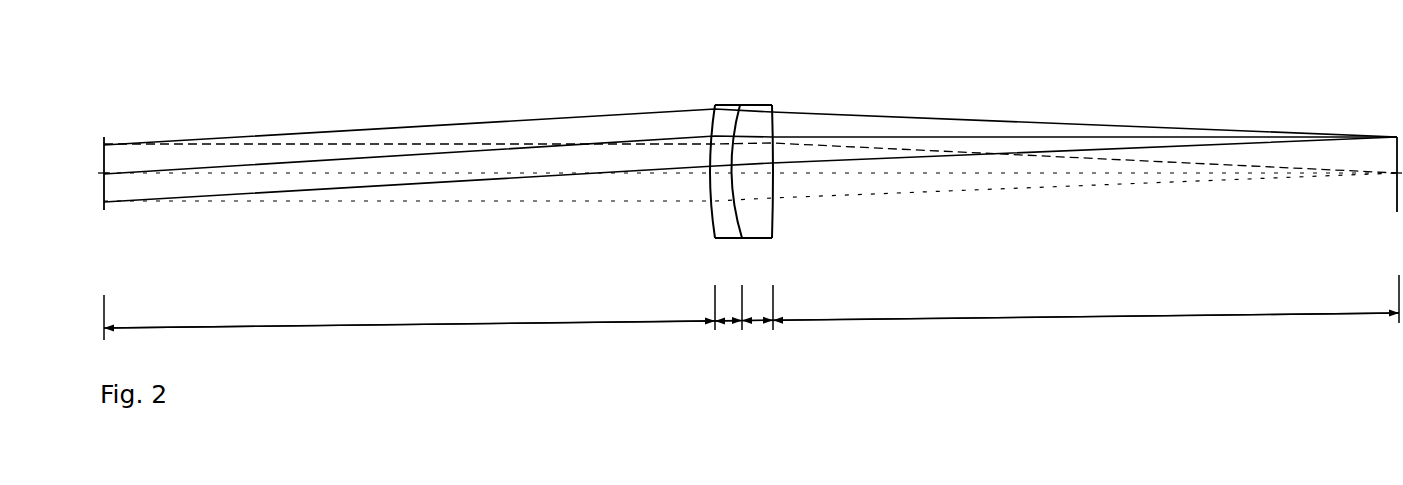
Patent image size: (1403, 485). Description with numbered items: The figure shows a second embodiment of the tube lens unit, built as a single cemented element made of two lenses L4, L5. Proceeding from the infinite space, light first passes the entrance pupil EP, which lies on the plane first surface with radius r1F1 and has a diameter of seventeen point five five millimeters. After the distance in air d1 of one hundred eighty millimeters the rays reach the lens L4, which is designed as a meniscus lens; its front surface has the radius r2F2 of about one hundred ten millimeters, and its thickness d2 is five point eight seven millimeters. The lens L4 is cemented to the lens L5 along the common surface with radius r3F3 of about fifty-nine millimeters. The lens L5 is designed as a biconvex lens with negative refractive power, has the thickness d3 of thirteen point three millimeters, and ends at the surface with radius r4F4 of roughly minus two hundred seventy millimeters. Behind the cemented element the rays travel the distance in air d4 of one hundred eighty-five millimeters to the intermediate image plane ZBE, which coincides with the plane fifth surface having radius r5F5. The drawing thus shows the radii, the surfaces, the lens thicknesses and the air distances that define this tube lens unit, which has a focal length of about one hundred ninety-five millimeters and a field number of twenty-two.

The entrance pupil EP is at (155, 128).
The radius r1 of surface F1 r1F1 is at (107, 133).
The lens L4 is at (684, 142).
The radius r2 of surface F2 r2F2 is at (713, 122).
The radius r3 of surface F3 r3F3 is at (739, 127).
The radius r4 of surface F4 r4F4 is at (772, 122).
The lens L5 is at (817, 142).
The intermediate image plane ZBE is at (1317, 130).
The radius r5 of surface F5 r5F5 is at (1392, 157).
The distance in air d1 is at (409, 305).
The thickness d2 is at (728, 302).
The thickness d3 is at (758, 302).
The distance in air d4 is at (1086, 301).